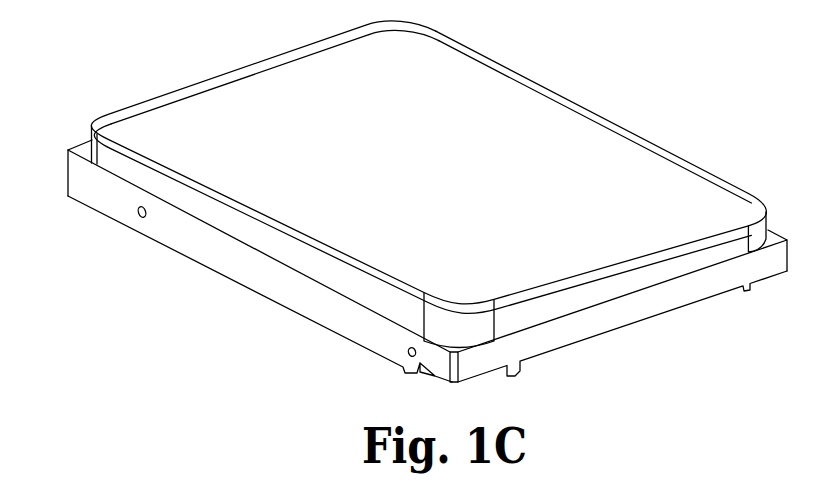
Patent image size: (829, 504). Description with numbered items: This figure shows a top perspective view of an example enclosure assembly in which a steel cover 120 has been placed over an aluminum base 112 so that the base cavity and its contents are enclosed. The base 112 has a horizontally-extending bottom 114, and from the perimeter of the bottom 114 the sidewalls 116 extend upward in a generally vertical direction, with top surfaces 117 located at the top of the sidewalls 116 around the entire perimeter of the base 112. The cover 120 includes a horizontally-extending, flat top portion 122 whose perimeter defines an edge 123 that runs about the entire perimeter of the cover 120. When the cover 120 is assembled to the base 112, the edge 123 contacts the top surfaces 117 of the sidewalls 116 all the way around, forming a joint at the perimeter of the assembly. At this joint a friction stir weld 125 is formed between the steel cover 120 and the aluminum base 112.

The base 112 is at (176, 284).
The bottom 114 is at (634, 353).
The sidewalls 116 is at (117, 166).
The top surfaces 117 is at (608, 120).
The cover 120 is at (533, 82).
The top portion 122 is at (554, 204).
The edge 123 is at (677, 158).
The friction stir weld 125 is at (177, 99).